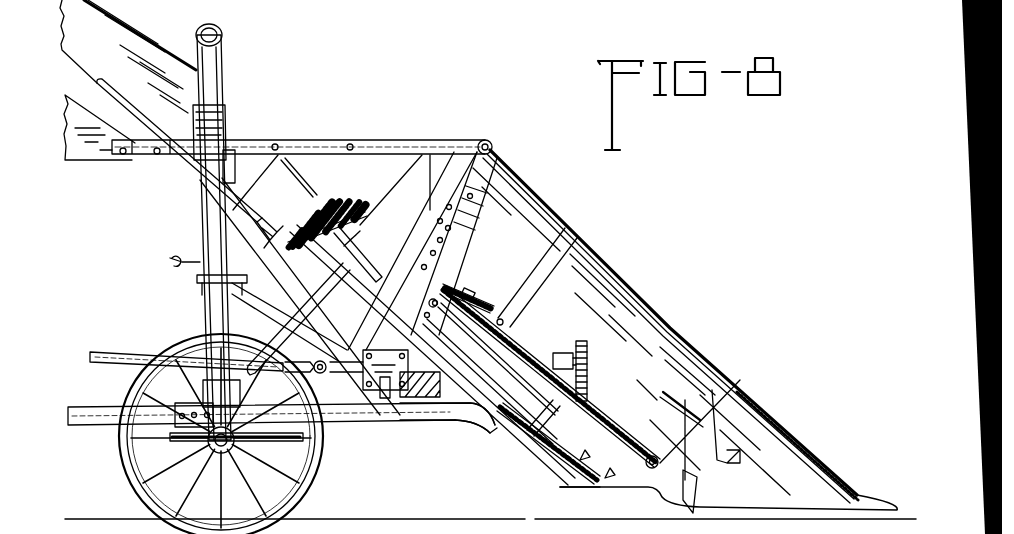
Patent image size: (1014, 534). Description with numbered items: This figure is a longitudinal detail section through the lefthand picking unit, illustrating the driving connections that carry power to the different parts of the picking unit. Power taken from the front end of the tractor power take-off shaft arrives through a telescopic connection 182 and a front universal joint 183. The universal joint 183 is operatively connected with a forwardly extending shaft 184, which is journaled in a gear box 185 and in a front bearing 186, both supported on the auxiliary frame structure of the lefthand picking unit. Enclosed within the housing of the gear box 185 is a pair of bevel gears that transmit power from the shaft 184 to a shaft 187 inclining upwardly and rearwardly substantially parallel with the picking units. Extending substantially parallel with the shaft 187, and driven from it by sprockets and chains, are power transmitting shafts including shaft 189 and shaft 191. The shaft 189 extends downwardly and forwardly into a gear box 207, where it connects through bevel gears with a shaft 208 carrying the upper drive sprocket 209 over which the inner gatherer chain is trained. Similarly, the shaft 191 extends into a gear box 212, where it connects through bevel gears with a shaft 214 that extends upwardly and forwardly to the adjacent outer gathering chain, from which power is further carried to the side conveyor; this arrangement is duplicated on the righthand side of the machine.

The telescopic connection 182 is at (103, 352).
The universal joint 183 is at (292, 382).
The forwardly extending shaft 184 is at (496, 360).
The gear box 185 is at (383, 390).
The front bearing 186 is at (558, 354).
The shaft 187 is at (258, 243).
The power transmitting shaft 189 is at (393, 272).
The power transmitting shaft 191 is at (346, 270).
The gear box 207 is at (447, 288).
The shaft 208 is at (468, 289).
The upper drive sprocket 209 is at (480, 303).
The gear box 212 is at (417, 407).
The shaft 214 is at (453, 413).